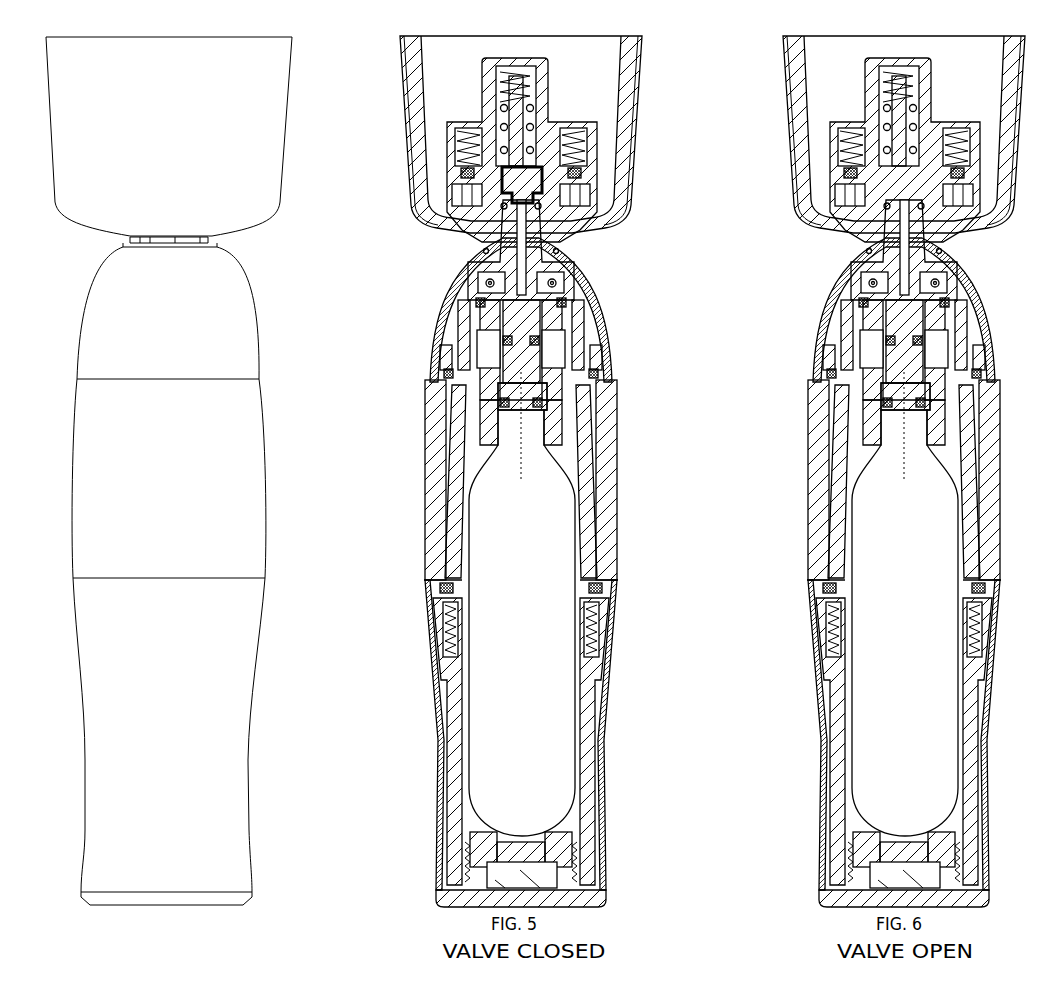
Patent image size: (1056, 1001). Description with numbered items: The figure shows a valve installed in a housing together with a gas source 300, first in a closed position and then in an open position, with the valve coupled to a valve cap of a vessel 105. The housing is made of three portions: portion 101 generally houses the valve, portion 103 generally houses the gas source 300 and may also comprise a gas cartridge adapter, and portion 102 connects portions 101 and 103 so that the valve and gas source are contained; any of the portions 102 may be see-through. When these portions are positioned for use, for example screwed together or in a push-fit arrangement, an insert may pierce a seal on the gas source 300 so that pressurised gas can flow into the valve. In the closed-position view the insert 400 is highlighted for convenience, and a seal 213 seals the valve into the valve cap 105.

In FIG. 5, the housing portion 101 is at (455, 287).
In FIG. 5, the housing portion 102 is at (430, 458).
In FIG. 5, the housing portion 103 is at (432, 712).
In FIG. 5, the valve cap of a vessel 105 is at (436, 127).
In FIG. 5, the insert 400 is at (502, 194).
In FIG. 5, the seal 213 is at (538, 206).
In FIG. 6, the seal 213 is at (886, 206).
In FIG. 5, the gas source 300 is at (522, 731).
In FIG. 6, the gas source 300 is at (903, 731).